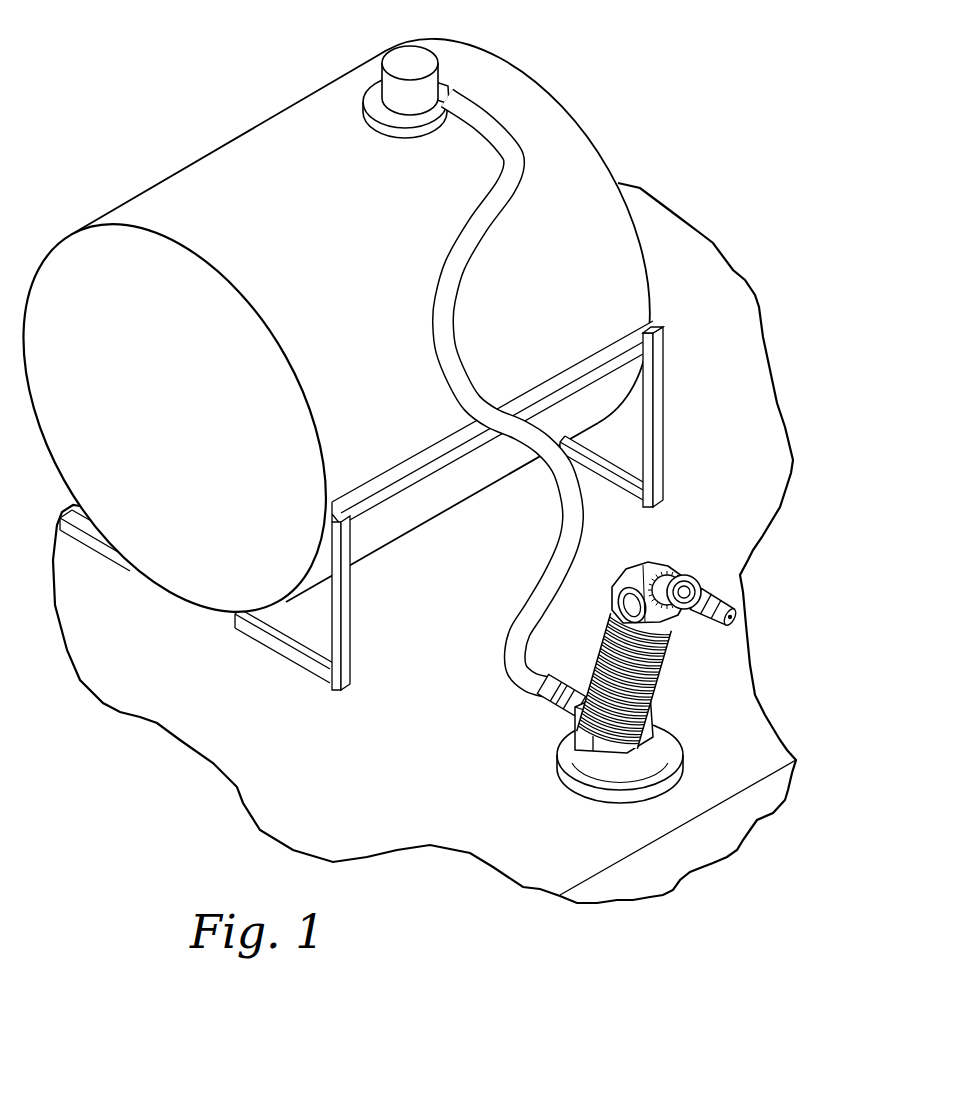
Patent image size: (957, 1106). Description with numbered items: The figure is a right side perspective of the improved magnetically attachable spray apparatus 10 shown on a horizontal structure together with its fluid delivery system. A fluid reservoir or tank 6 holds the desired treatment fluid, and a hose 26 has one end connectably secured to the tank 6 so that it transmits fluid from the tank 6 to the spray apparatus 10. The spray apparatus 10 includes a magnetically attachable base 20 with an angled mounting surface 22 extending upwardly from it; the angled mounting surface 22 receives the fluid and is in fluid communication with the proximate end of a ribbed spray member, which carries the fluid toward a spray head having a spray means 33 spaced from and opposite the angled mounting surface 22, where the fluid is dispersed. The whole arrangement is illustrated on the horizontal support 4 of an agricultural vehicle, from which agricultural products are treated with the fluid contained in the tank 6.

The horizontal support 4 is at (267, 757).
The tank 6 is at (60, 293).
The magnetically attachable spray apparatus 10 is at (635, 689).
The magnetically attachable base 20 is at (653, 770).
The angled mounting surface 22 is at (560, 757).
The hose 26 is at (566, 527).
The spray means 33 is at (716, 572).